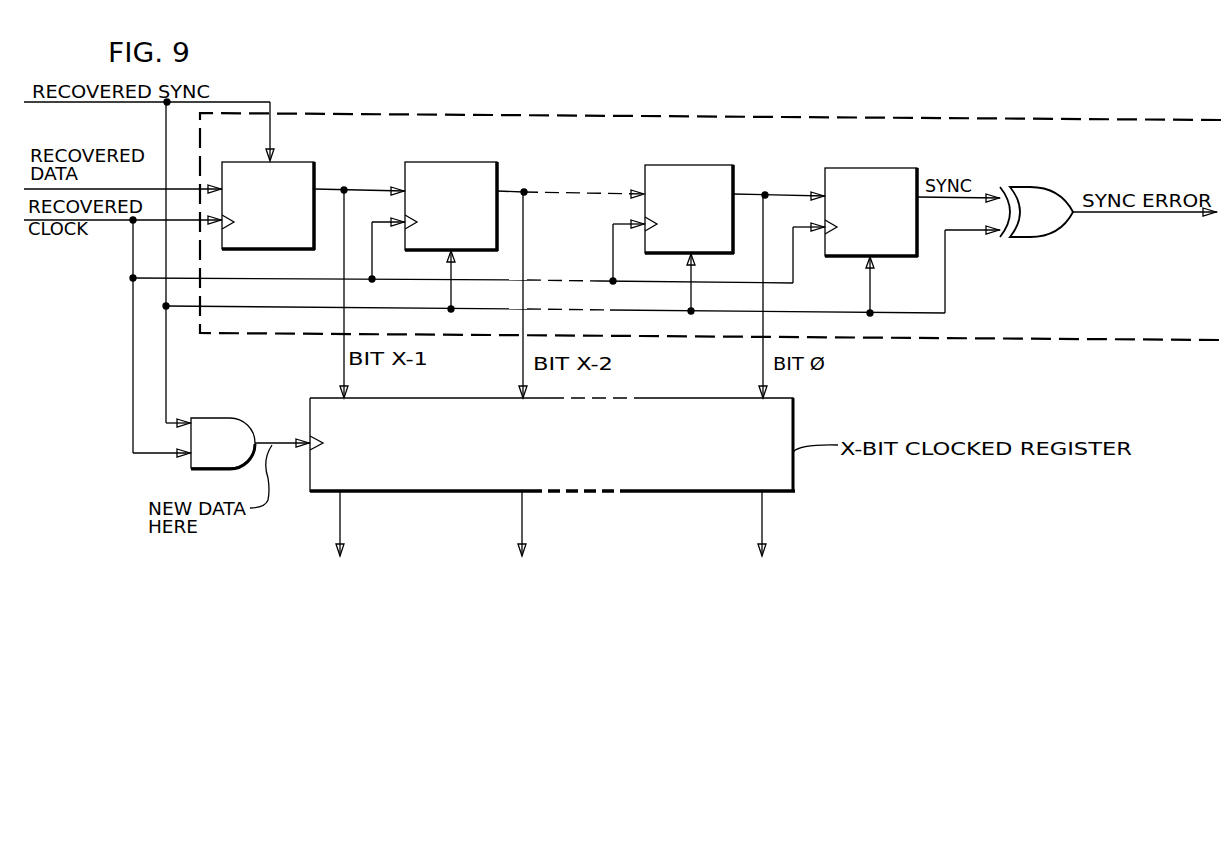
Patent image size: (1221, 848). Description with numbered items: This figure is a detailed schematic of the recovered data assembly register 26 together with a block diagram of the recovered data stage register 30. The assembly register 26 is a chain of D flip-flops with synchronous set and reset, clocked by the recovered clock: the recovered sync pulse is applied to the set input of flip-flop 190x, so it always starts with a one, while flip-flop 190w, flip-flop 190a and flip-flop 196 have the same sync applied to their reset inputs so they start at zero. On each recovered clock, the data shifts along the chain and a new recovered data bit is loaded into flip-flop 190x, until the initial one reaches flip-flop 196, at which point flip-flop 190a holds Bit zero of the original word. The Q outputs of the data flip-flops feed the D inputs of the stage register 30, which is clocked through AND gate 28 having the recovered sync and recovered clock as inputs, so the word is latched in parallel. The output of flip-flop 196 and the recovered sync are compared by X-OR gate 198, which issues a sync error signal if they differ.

The recovered data assembly register 26 is at (522, 112).
The flip-flop 190x is at (283, 162).
The flip-flop 190w is at (488, 162).
The flip-flop 190a is at (718, 165).
The flip-flop 196 is at (890, 168).
The X-OR gate 198 is at (1057, 197).
The AND gate 28 is at (217, 418).
The recovered data stage register 30 is at (478, 398).